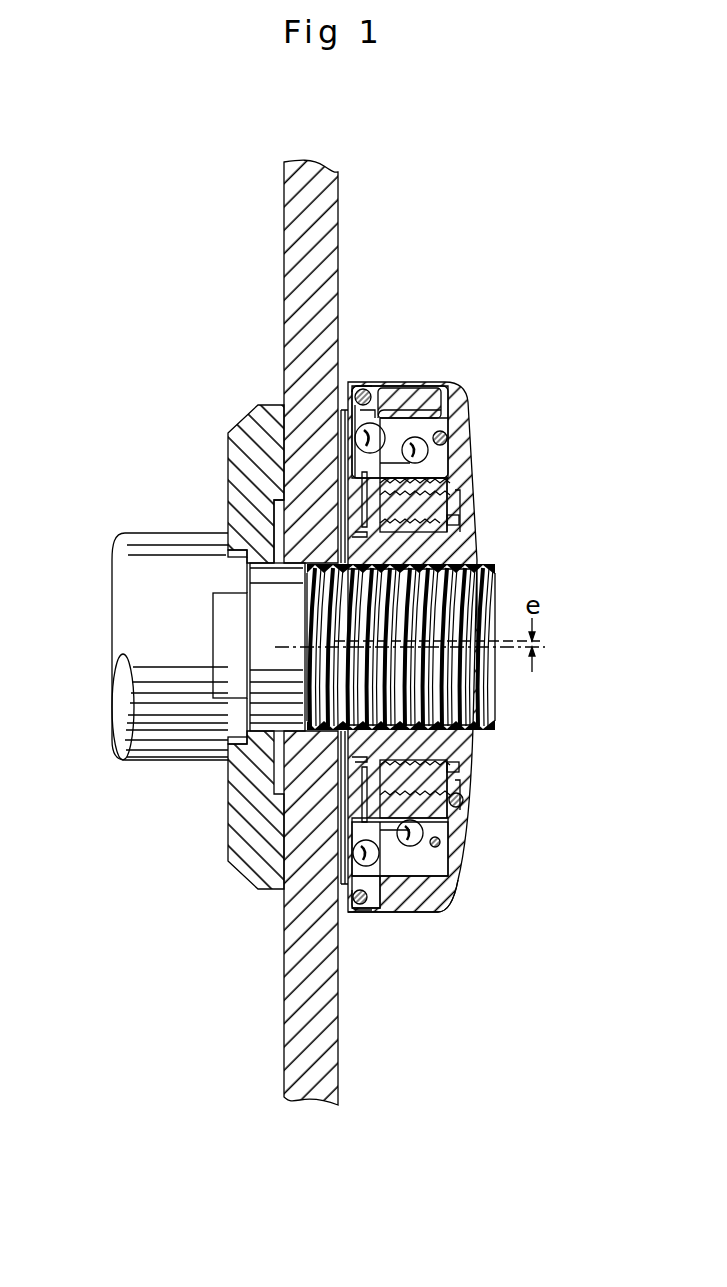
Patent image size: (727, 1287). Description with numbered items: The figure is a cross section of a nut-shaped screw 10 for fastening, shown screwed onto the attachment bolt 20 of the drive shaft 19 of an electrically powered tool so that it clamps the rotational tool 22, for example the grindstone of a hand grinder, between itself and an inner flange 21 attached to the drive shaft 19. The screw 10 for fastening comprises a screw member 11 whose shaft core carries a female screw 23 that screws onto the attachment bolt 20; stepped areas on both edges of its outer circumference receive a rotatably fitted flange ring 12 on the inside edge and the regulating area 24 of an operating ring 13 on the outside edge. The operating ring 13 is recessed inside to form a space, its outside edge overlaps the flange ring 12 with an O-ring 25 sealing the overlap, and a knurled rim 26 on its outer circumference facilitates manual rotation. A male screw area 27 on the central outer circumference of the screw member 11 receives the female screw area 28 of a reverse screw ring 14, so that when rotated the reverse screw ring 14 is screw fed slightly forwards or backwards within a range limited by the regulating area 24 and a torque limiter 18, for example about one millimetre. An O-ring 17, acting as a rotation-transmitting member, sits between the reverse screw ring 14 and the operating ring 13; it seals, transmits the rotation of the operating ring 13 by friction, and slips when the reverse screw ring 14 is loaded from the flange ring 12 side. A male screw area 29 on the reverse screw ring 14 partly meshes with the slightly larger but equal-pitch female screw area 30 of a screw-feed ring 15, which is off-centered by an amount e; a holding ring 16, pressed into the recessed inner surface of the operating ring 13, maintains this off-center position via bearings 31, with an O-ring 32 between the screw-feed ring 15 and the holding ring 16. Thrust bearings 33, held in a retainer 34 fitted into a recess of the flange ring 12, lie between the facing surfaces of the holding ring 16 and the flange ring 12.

The screw for fastening 10 is at (514, 479).
The screw member 11 is at (455, 554).
The flange ring 12 is at (340, 455).
The operating ring 13 is at (432, 393).
The reverse screw ring 14 is at (357, 503).
The screw-feed ring 15 is at (447, 467).
The holding ring 16 is at (392, 392).
The O-ring 17 is at (447, 490).
The torque limiter 18 is at (363, 528).
The drive shaft 19 is at (127, 582).
The attachment bolt 20 is at (495, 706).
The inner flange 21 is at (230, 828).
The rotational tool 22 is at (287, 938).
The female screw 23 is at (437, 755).
The regulating area 24 is at (470, 527).
The O-ring 25 is at (358, 913).
The knurled rim 26 is at (417, 913).
The male screw area 27 is at (447, 767).
The female screw area 28 is at (447, 785).
The male screw area 29 is at (443, 820).
The female screw area 30 is at (447, 840).
The bearings 31 is at (463, 395).
The O-ring 32 is at (447, 427).
The thrust bearings 33 is at (350, 405).
The retainer 34 is at (350, 398).